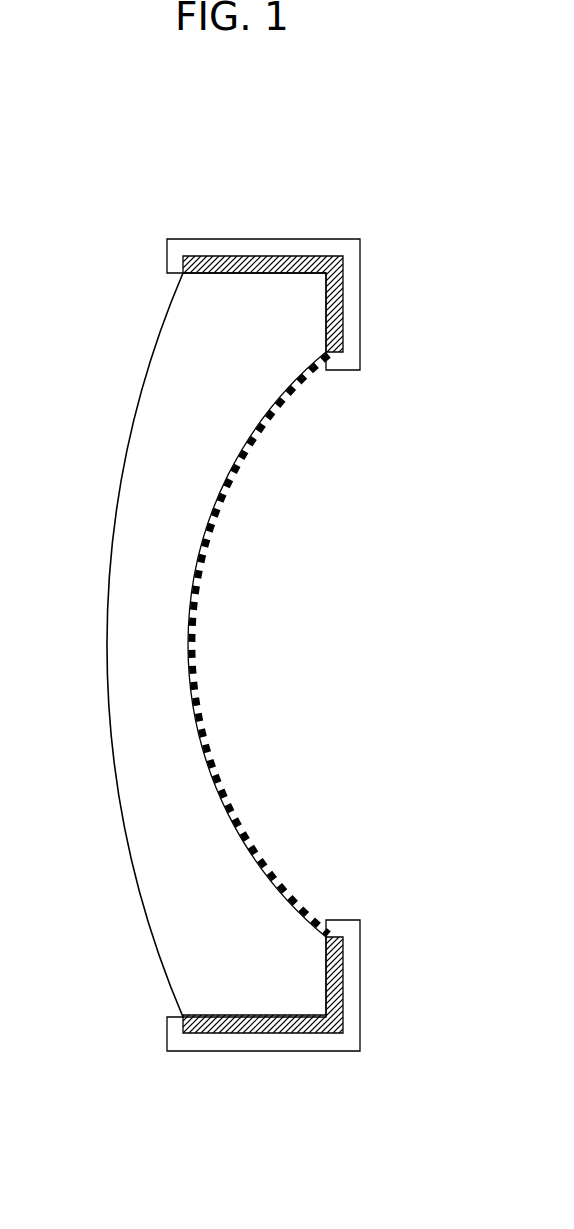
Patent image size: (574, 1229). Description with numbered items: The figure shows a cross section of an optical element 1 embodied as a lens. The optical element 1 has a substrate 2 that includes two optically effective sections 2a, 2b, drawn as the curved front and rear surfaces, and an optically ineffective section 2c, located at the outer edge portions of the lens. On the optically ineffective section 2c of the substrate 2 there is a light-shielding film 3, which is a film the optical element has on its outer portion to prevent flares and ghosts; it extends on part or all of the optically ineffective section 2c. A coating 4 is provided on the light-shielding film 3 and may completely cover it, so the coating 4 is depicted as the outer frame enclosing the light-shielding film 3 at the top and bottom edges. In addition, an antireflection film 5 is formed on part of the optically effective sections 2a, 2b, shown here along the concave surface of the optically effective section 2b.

The optical element 1 is at (216, 134).
The substrate 2 is at (185, 645).
The optically effective section 2a is at (121, 460).
The optically effective section 2b is at (248, 446).
The optically ineffective section 2c is at (263, 1007).
The light-shielding film 3 is at (185, 1022).
The coating 4 is at (352, 985).
The antireflection film 5 is at (245, 832).